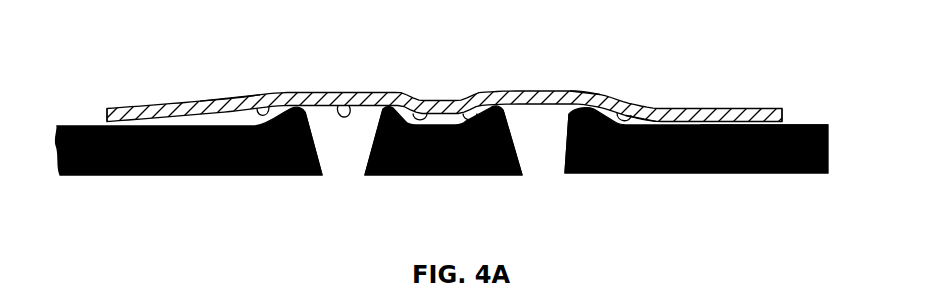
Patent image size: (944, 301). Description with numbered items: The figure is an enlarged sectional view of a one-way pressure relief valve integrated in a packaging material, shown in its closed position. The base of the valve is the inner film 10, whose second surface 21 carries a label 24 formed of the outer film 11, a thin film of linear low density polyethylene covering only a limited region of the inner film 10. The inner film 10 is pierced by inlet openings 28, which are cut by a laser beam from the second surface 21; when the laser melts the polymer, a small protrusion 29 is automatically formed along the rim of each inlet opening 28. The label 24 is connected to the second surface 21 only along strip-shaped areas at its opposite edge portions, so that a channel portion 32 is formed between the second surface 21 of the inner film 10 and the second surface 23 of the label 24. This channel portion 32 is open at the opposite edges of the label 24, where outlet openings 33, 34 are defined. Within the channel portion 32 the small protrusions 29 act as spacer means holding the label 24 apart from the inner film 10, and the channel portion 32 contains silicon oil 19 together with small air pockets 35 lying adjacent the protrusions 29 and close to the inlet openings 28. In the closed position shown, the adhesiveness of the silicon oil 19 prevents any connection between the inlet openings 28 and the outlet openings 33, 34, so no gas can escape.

The inner film 10 is at (812, 140).
The outer film 11 is at (697, 110).
The silicon oil 19 is at (240, 107).
The second surface of the inner film 21 is at (808, 123).
The second surface of the label 23 is at (347, 92).
The label 24 is at (460, 78).
The inlet openings 28 is at (353, 147).
The protrusion 29 is at (583, 97).
The channel portion 32 is at (640, 122).
The outlet opening 33 is at (100, 125).
The outlet opening 34 is at (787, 122).
The air pockets 35 is at (265, 110).